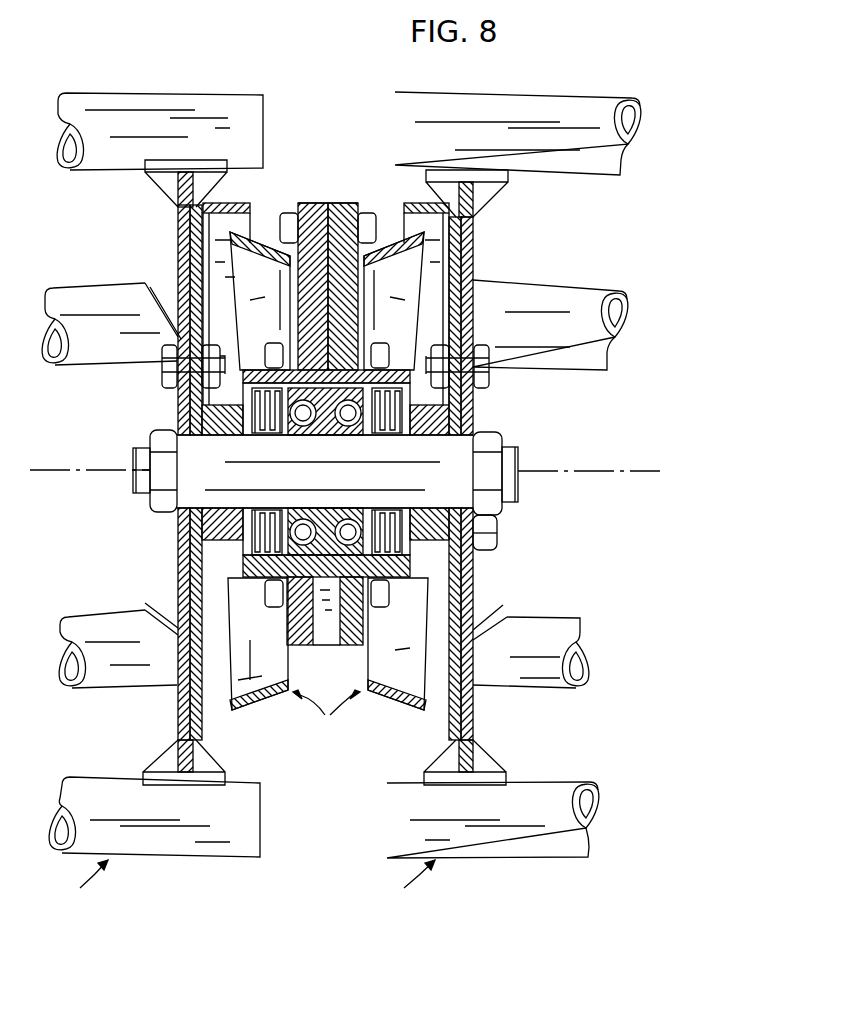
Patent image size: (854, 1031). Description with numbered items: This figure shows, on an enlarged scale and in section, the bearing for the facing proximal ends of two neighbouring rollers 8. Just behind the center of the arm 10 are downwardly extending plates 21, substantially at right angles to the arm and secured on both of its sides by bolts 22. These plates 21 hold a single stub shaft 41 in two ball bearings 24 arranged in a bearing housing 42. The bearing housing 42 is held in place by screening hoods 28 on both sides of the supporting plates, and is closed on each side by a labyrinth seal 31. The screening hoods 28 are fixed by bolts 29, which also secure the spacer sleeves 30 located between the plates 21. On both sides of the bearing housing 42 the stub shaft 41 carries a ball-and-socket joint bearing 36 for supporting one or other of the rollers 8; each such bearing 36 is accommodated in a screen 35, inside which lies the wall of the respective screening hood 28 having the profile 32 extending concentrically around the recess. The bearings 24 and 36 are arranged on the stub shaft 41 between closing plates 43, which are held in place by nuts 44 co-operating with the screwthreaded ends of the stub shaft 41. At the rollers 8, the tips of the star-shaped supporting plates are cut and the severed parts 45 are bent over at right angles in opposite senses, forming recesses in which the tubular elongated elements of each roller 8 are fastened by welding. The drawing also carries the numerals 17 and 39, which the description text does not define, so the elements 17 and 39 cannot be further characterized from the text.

The roller 8 is at (247, 880).
The arm 10 is at (330, 200).
The blades 17 is at (80, 97).
The plates 21 is at (296, 212).
The bolts 22 is at (258, 225).
The ball bearings 24 is at (350, 420).
The screening hood 28 is at (326, 712).
The bolts 29 is at (270, 358).
The spacer sleeves 30 is at (330, 612).
The labyrinth seal 31 is at (262, 433).
The profile 32 is at (270, 700).
The screen 35 is at (215, 233).
The ball-and-socket joint bearing 36 is at (200, 493).
The bolts 39 is at (505, 286).
The stub shaft 41 is at (150, 480).
The bearing housing 42 is at (195, 545).
The closing plates 43 is at (155, 437).
The nuts 44 is at (140, 460).
The severed parts 45 is at (170, 166).